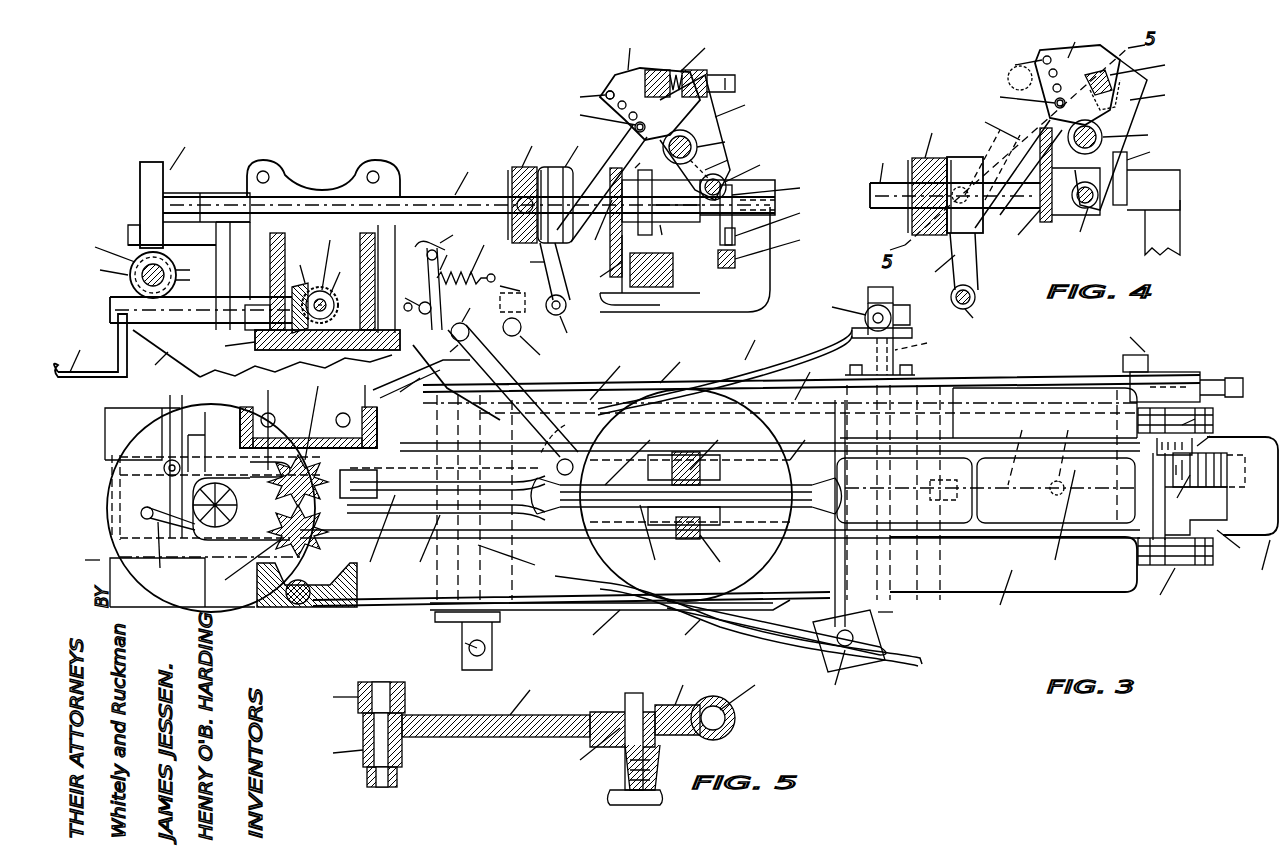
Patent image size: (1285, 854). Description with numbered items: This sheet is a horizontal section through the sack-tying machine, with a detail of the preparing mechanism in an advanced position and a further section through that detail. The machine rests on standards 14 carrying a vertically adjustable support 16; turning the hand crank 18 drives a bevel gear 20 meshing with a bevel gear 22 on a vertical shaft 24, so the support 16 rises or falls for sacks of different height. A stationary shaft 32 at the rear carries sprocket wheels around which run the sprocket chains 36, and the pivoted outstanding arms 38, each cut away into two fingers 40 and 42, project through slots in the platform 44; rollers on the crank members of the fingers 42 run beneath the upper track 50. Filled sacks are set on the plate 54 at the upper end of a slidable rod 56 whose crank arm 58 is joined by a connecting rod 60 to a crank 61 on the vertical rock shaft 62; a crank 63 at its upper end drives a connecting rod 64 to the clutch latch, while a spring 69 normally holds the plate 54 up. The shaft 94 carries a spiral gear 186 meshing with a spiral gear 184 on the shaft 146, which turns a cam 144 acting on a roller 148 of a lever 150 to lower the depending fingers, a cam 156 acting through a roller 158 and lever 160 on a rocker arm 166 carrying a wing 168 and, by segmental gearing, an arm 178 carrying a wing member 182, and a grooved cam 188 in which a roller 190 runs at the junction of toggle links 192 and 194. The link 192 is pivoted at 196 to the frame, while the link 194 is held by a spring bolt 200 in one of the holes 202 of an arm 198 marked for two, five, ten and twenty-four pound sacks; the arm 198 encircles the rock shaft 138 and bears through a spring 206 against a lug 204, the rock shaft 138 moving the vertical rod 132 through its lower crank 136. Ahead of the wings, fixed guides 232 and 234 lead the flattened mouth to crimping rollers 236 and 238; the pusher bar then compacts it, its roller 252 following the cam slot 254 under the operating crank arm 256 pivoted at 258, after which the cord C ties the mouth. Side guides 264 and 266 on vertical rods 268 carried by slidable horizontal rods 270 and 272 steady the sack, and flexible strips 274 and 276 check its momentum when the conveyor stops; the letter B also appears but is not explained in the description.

In FIG. 3, the standards 14 is at (335, 364).
In FIG. 3, the support 16 is at (166, 353).
In FIG. 3, the hand crank 18 is at (90, 345).
In FIG. 3, the bevel gear 20 is at (300, 290).
In FIG. 3, the bevel gear 22 is at (330, 264).
In FIG. 3, the vertical shaft 24 is at (327, 288).
In FIG. 3, the stationary shaft 32 is at (1183, 361).
In FIG. 3, the sprocket chains 36 is at (1175, 506).
In FIG. 3, the outstanding arms 38 is at (1034, 505).
In FIG. 3, the finger 40 is at (1235, 547).
In FIG. 3, the finger 42 is at (1195, 438).
In FIG. 3, the platform 44 is at (1013, 580).
In FIG. 3, the upper track 50 is at (1190, 496).
In FIG. 3, the plate 54 is at (987, 516).
In FIG. 3, the slidable rod 56 is at (1005, 455).
In FIG. 3, the crank arm 58 is at (1045, 436).
In FIG. 3, the connecting rod 60 is at (808, 376).
In FIG. 3, the crank 61 is at (456, 381).
In FIG. 3, the vertical rock shaft 62 is at (412, 297).
In FIG. 3, the crank 63 is at (449, 285).
In FIG. 3, the connecting rod 64 is at (444, 234).
In FIG. 3, the spring 69 is at (485, 261).
In FIG. 3, the shaft 94 is at (129, 257).
In FIG. 3, the vertical rod 132 is at (742, 173).
In FIG. 4, the vertical rod 132 is at (1088, 216).
In FIG. 3, the lower crank 136 is at (719, 162).
In FIG. 3, the rock shaft 138 is at (712, 146).
In FIG. 4, the rock shaft 138 is at (1125, 137).
In FIG. 3, the cam 144 is at (633, 211).
In FIG. 4, the cam 144 is at (1054, 191).
In FIG. 3, the shaft 146 is at (469, 188).
In FIG. 4, the shaft 146 is at (953, 176).
In FIG. 3, the roller 148 is at (661, 204).
In FIG. 3, the lever 150 is at (636, 270).
In FIG. 3, the cam 156 is at (774, 212).
In FIG. 4, the cam 156 is at (1147, 200).
In FIG. 3, the roller 158 is at (776, 224).
In FIG. 3, the lever 160 is at (773, 247).
In FIG. 3, the rocker arm 166 is at (691, 453).
In FIG. 3, the wing 168 is at (686, 468).
In FIG. 3, the arm 178 is at (693, 542).
In FIG. 3, the wing member 182 is at (658, 543).
In FIG. 3, the spiral gear 184 is at (169, 187).
In FIG. 3, the spiral gear 186 is at (120, 275).
In FIG. 3, the cam 188 is at (528, 185).
In FIG. 4, the cam 188 is at (929, 175).
In FIG. 3, the roller 190 is at (566, 185).
In FIG. 5, the roller 190 is at (351, 697).
In FIG. 3, the toggle link 192 is at (525, 279).
In FIG. 4, the toggle link 192 is at (947, 223).
In FIG. 5, the toggle link 192 is at (349, 750).
In FIG. 3, the toggle link 194 is at (602, 193).
In FIG. 4, the toggle link 194 is at (1010, 168).
In FIG. 5, the toggle link 194 is at (528, 710).
In FIG. 3, the pivot 196 is at (569, 326).
In FIG. 4, the pivot 196 is at (973, 311).
In FIG. 3, the arm 198 is at (650, 85).
In FIG. 4, the arm 198 is at (1077, 69).
In FIG. 5, the arm 198 is at (677, 700).
In FIG. 3, the spring bolt 200 is at (593, 116).
In FIG. 4, the spring bolt 200 is at (1011, 95).
In FIG. 5, the spring bolt 200 is at (607, 749).
In FIG. 3, the holes 202 is at (580, 95).
In FIG. 4, the holes 202 is at (1010, 71).
In FIG. 3, the lug 204 is at (725, 137).
In FIG. 4, the lug 204 is at (1137, 135).
In FIG. 3, the spring 206 is at (690, 63).
In FIG. 4, the spring 206 is at (1139, 79).
In FIG. 5, the spring 206 is at (735, 704).
In FIG. 3, the fixed guide 232 is at (442, 526).
In FIG. 3, the fixed guide 234 is at (446, 543).
In FIG. 3, the crimping roller 236 is at (301, 463).
In FIG. 3, the crimping roller 238 is at (236, 540).
In FIG. 3, the roller 252 is at (310, 408).
In FIG. 3, the cam slot 254 is at (269, 423).
In FIG. 3, the operating crank arm 256 is at (542, 400).
In FIG. 3, the pivot 258 is at (488, 316).
In FIG. 3, the fixed guide 264 is at (684, 362).
In FIG. 3, the fixed guide 266 is at (610, 627).
In FIG. 3, the vertical rods 268 is at (661, 500).
In FIG. 3, the slidable horizontal rod 270 is at (710, 430).
In FIG. 3, the slidable horizontal rod 272 is at (738, 614).
In FIG. 3, the flexible strip 274 is at (725, 367).
In FIG. 3, the flexible strip 276 is at (761, 624).
In FIG. 3, the cord C is at (168, 547).
In FIG. 3, the base B is at (91, 575).